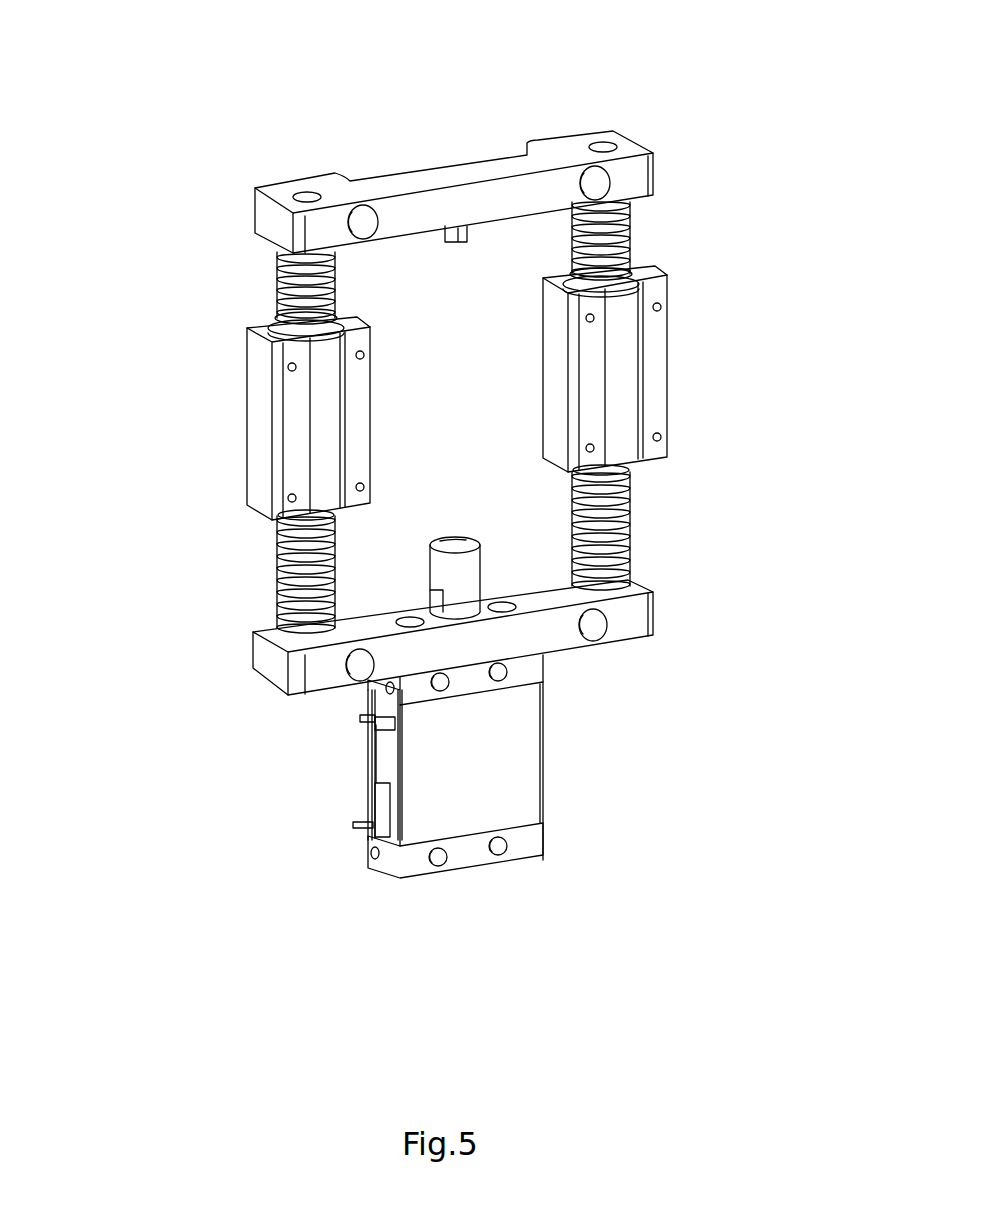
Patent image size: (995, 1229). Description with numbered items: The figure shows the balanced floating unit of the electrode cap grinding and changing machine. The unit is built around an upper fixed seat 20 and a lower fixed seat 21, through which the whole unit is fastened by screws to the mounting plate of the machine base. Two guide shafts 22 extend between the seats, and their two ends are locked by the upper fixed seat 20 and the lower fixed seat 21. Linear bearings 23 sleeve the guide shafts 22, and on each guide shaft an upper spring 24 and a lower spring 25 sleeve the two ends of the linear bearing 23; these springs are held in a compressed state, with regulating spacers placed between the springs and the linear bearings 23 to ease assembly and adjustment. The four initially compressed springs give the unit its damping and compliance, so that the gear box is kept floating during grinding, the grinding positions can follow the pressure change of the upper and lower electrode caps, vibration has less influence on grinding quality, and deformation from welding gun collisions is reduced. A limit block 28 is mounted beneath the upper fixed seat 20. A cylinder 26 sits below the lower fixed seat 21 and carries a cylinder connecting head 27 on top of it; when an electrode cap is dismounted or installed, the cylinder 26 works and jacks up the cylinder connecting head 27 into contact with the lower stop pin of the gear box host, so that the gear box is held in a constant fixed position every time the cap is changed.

The upper fixed seat 20 is at (440, 200).
The lower fixed seat 21 is at (430, 650).
The guide shafts 22 is at (306, 193).
The linear bearings 23 is at (322, 415).
The upper spring 24 is at (307, 287).
The lower spring 25 is at (318, 595).
The cylinder 26 is at (460, 780).
The cylinder connecting head 27 is at (465, 577).
The limit block 28 is at (467, 238).